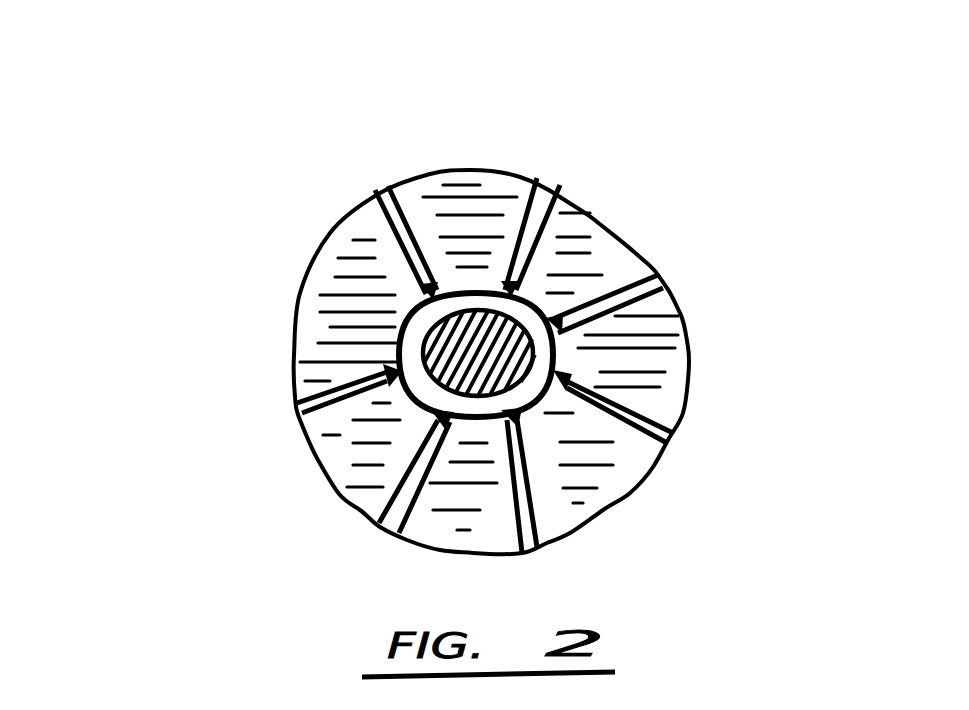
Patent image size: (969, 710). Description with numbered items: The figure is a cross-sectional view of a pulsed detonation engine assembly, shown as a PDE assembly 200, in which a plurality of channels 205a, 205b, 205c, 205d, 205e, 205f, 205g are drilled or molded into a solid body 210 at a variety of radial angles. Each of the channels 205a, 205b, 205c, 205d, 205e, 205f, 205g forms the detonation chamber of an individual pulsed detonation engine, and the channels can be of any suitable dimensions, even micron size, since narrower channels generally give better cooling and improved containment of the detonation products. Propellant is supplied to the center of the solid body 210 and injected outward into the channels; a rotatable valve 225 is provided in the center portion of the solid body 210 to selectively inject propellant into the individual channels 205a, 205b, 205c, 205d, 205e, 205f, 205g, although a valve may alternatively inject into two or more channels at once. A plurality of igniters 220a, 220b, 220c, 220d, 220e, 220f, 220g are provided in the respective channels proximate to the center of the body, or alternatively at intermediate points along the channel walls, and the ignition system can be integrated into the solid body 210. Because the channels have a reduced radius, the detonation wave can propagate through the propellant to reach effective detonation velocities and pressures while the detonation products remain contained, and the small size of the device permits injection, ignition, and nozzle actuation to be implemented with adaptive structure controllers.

The PDE assembly 200 is at (200, 236).
The solid body 210 is at (643, 367).
The rotatable valve 225 is at (475, 350).
The channel 205a is at (580, 190).
The channel 205b is at (642, 266).
The channel 205c is at (673, 433).
The channel 205d is at (563, 540).
The channel 205e is at (363, 517).
The channel 205f is at (292, 402).
The channel 205g is at (380, 190).
The igniter 220a is at (537, 178).
The igniter 220b is at (558, 340).
The igniter 220c is at (562, 373).
The igniter 220d is at (555, 414).
The igniter 220e is at (402, 530).
The igniter 220f is at (390, 385).
The igniter 220g is at (312, 301).